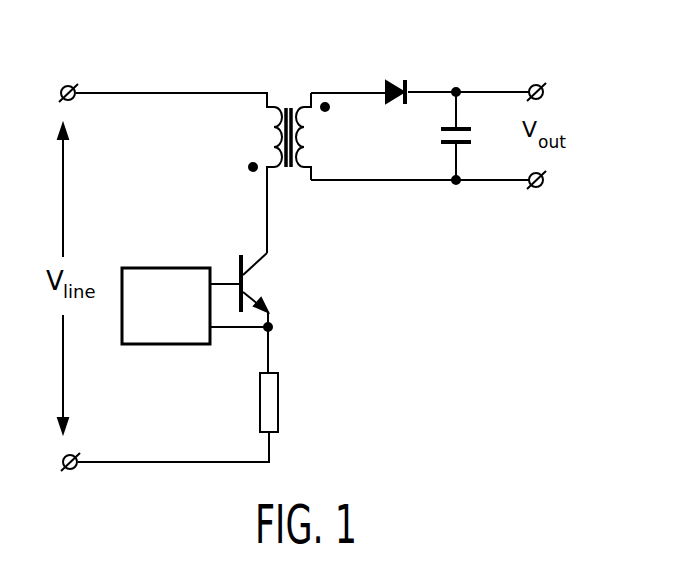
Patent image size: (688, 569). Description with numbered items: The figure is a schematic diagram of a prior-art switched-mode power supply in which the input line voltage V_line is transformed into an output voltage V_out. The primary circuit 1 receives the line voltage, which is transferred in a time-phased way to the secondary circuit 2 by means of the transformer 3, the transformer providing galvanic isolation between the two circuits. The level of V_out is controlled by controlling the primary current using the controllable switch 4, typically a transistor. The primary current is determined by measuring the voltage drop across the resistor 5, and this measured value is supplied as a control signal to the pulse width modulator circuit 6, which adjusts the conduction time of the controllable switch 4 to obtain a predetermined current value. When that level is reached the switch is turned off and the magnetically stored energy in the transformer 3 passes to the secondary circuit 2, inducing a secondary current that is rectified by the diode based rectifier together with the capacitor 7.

The primary circuit 1 is at (186, 92).
The secondary circuit 2 is at (428, 92).
The transformer 3 is at (288, 170).
The controllable switch 4 is at (256, 291).
The resistor 5 is at (279, 400).
The PWM controller 6 is at (170, 268).
The capacitor 7 is at (441, 134).